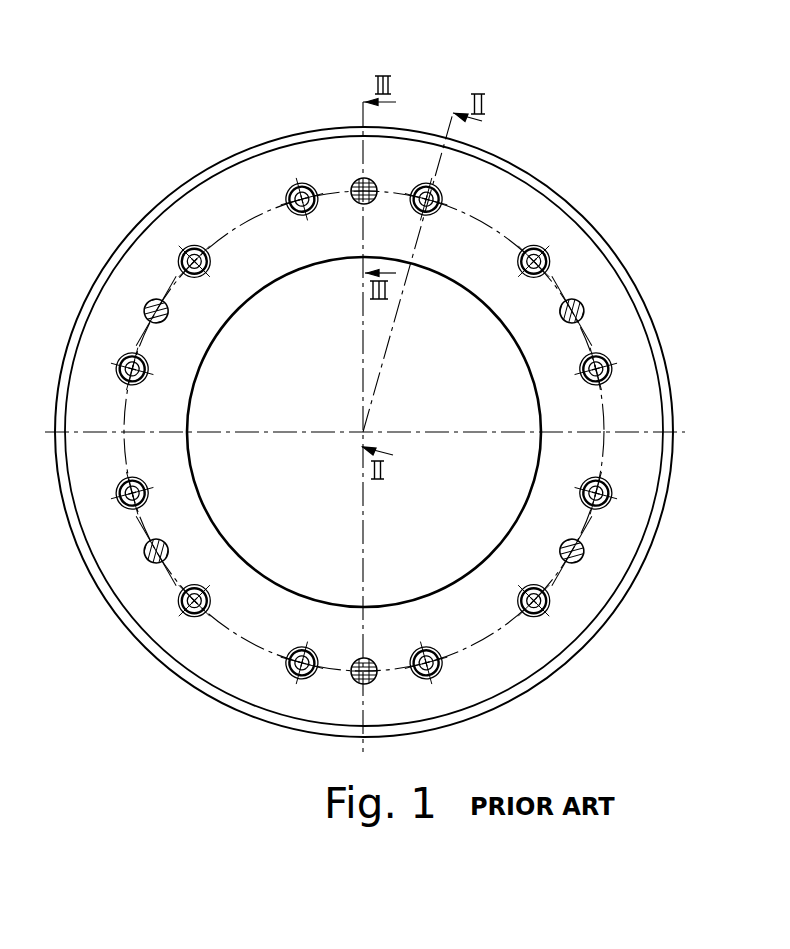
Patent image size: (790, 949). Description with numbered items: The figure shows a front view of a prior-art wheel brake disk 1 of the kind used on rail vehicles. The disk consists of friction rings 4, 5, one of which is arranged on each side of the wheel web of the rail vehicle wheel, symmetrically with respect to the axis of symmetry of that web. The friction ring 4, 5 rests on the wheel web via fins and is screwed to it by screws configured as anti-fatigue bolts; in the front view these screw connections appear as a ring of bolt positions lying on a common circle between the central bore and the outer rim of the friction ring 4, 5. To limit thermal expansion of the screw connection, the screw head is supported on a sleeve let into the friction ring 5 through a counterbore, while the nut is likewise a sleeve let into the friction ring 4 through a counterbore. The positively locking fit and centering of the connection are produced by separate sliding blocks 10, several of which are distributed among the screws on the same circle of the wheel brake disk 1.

The wheel brake disk 1 is at (537, 138).
The friction ring 4 is at (568, 250).
The friction ring 5 is at (364, 432).
The sliding block 10 is at (576, 305).